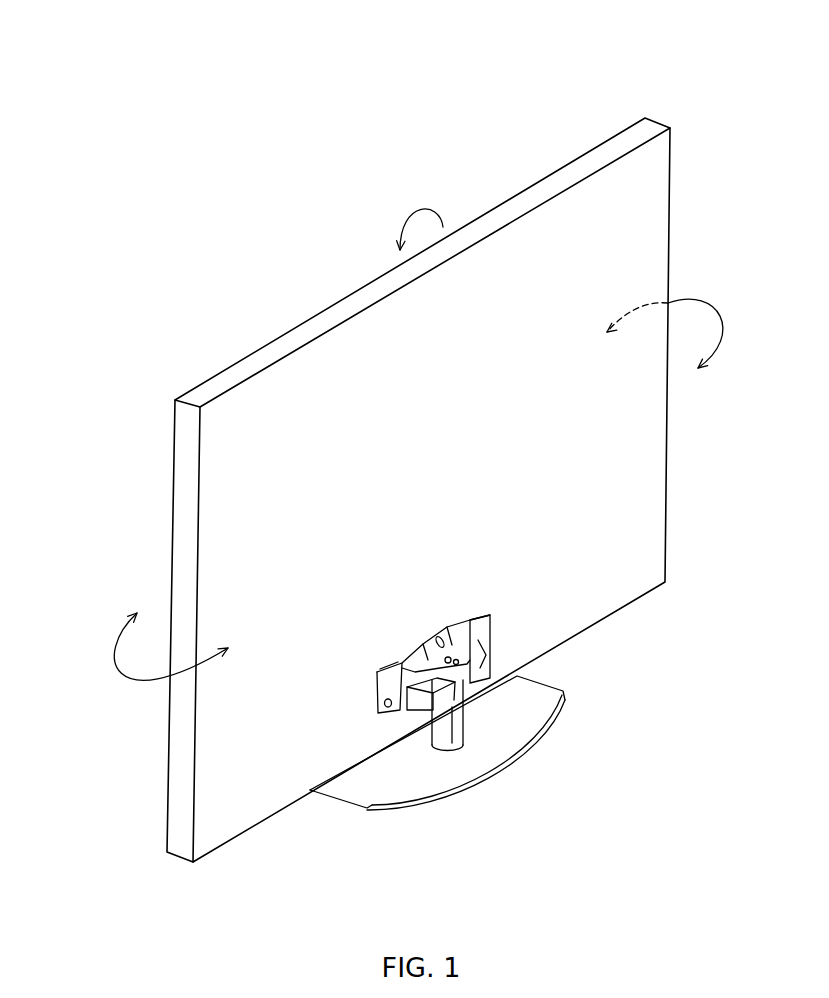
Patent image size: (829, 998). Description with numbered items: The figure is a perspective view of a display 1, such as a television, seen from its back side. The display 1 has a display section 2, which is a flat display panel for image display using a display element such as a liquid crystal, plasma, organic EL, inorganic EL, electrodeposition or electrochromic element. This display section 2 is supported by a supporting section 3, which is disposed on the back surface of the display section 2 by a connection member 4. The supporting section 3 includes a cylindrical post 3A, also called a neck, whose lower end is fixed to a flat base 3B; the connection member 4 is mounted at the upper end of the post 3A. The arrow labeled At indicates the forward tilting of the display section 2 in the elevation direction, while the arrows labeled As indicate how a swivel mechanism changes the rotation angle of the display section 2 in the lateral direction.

The display 1 is at (680, 60).
The display section 2 is at (660, 462).
The supporting section 3 is at (437, 792).
The post 3A is at (463, 727).
The base 3B is at (503, 866).
The connection member 4 is at (483, 632).